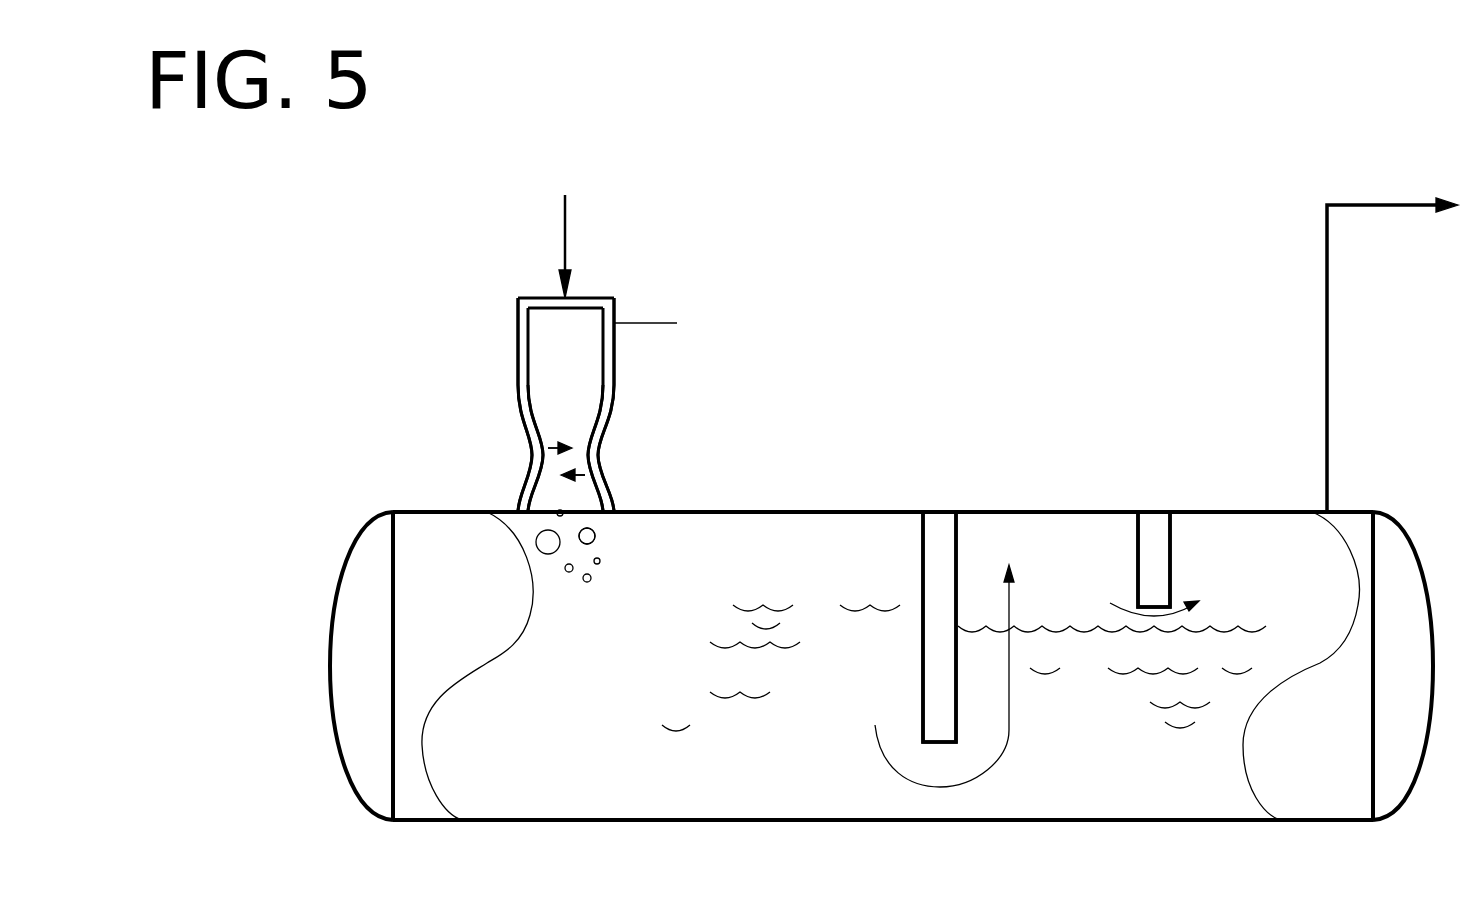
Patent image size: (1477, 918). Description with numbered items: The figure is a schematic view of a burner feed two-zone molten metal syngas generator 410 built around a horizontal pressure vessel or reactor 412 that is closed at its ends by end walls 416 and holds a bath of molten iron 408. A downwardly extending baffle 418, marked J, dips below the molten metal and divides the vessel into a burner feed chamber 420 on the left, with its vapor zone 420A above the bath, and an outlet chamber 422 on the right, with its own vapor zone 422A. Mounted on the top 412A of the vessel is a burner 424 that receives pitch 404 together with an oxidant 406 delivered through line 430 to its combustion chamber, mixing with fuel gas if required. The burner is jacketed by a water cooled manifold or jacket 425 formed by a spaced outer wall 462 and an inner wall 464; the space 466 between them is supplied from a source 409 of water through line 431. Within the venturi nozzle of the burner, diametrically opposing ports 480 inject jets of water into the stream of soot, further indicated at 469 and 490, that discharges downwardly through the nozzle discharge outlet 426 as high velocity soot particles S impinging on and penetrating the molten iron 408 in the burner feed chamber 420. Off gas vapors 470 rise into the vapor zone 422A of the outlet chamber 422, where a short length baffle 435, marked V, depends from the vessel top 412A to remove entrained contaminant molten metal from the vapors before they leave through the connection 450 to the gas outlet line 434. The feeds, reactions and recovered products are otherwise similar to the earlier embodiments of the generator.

The pitch 404 is at (556, 230).
The burner 424 is at (592, 298).
The space 466 is at (525, 322).
The line 430 is at (645, 309).
The oxygen 406 is at (728, 319).
The burner feed two-zone molten metal syngas generator 410 is at (840, 370).
The vapor outlet pipe 434 is at (1327, 344).
The source of water 409 is at (520, 387).
The line 431 is at (415, 390).
The inner wall 464 is at (608, 382).
The flame zone 469 is at (473, 487).
The water cooled manifold or jacket 425 is at (598, 440).
The outer wall 462 is at (597, 457).
The ports 480 is at (593, 467).
The flow path 490 is at (502, 486).
The bubbles 426 is at (568, 526).
The soot particle S is at (600, 558).
The top 412A is at (803, 466).
The vapor outlet 450 is at (1330, 511).
The baffle pipe 418 is at (958, 550).
The baffle J is at (923, 527).
The short length baffle 435 is at (1172, 550).
The vent V is at (1138, 527).
The first chamber 420A is at (768, 587).
The vapor zone 422A is at (1303, 604).
The tank end wall 416 is at (330, 665).
The molten iron 408 is at (830, 700).
The off gas vapors 470 is at (1010, 740).
The pressure vessel or reactor 412 is at (423, 820).
The burner feed chamber 420 is at (563, 802).
The outlet chamber 422 is at (1072, 808).